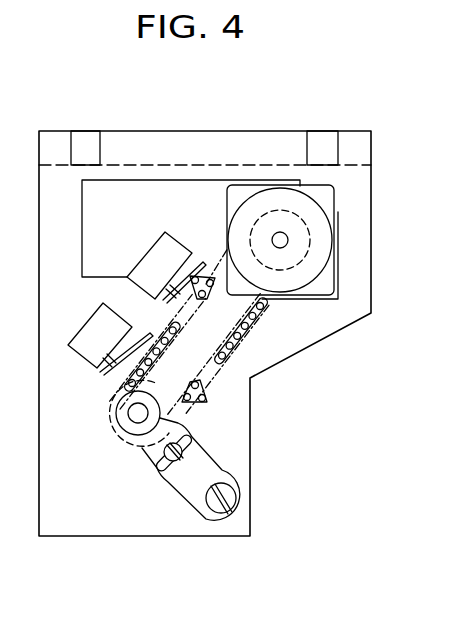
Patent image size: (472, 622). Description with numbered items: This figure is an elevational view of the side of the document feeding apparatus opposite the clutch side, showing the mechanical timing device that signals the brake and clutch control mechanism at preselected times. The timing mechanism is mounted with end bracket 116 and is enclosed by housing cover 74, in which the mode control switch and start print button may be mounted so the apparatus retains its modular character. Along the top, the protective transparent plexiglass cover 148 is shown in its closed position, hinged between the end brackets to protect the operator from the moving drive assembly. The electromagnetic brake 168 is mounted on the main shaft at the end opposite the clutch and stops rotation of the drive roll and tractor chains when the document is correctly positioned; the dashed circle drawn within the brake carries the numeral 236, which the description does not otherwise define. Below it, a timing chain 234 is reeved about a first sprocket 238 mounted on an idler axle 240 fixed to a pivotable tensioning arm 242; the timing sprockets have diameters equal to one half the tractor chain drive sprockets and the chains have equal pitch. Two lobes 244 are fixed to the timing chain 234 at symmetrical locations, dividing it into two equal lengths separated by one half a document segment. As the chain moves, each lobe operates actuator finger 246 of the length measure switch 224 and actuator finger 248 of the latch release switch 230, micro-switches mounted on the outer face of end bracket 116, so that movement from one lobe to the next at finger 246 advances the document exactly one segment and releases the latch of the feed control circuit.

The housing cover 74 is at (130, 538).
The protective transparent plexiglass cover 148 is at (265, 143).
The end bracket 116 is at (322, 335).
The electromagnetic brake 168 is at (313, 204).
The reel hub pitch circle 236 is at (306, 250).
The length measure switch 224 is at (147, 258).
The actuator finger 246 is at (175, 272).
The latch release switch 230 is at (88, 333).
The actuator finger 248 is at (148, 336).
The timing chain 234 is at (235, 356).
The lobes 244 is at (208, 274).
The idler axle 240 is at (128, 413).
The first sprocket 238 is at (115, 437).
The pivotable tensioning arm 242 is at (223, 468).